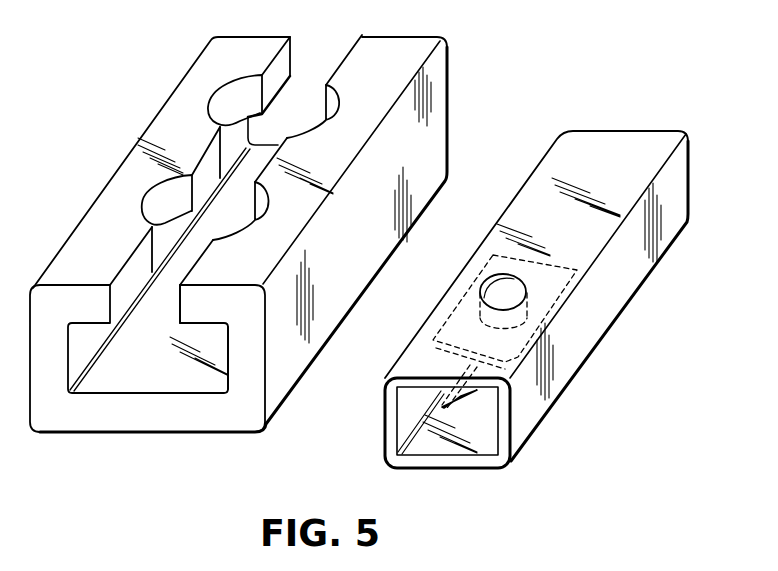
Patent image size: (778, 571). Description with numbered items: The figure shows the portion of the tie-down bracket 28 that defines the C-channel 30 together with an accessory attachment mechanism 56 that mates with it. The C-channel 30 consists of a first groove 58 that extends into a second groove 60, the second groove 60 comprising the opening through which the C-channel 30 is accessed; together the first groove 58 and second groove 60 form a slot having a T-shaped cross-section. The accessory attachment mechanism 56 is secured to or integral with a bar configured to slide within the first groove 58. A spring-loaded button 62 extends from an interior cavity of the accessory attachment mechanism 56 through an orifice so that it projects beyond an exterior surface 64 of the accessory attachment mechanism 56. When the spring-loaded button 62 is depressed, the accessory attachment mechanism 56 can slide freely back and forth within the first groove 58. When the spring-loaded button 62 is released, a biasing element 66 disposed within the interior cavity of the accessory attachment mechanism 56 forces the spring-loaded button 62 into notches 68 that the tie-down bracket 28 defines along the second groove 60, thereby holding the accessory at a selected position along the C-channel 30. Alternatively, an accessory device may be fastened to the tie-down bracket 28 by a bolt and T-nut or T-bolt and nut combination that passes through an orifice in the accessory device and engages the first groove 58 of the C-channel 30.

The tie-down bracket 28 is at (235, 245).
The C-channel 30 is at (151, 391).
The accessory attachment mechanism 56 is at (549, 286).
The first groove 58 is at (228, 337).
The second groove 60 is at (180, 305).
The spring-loaded button 62 is at (495, 277).
The exterior surface 64 is at (599, 158).
The biasing element 66 is at (460, 397).
The notches 68 is at (217, 110).